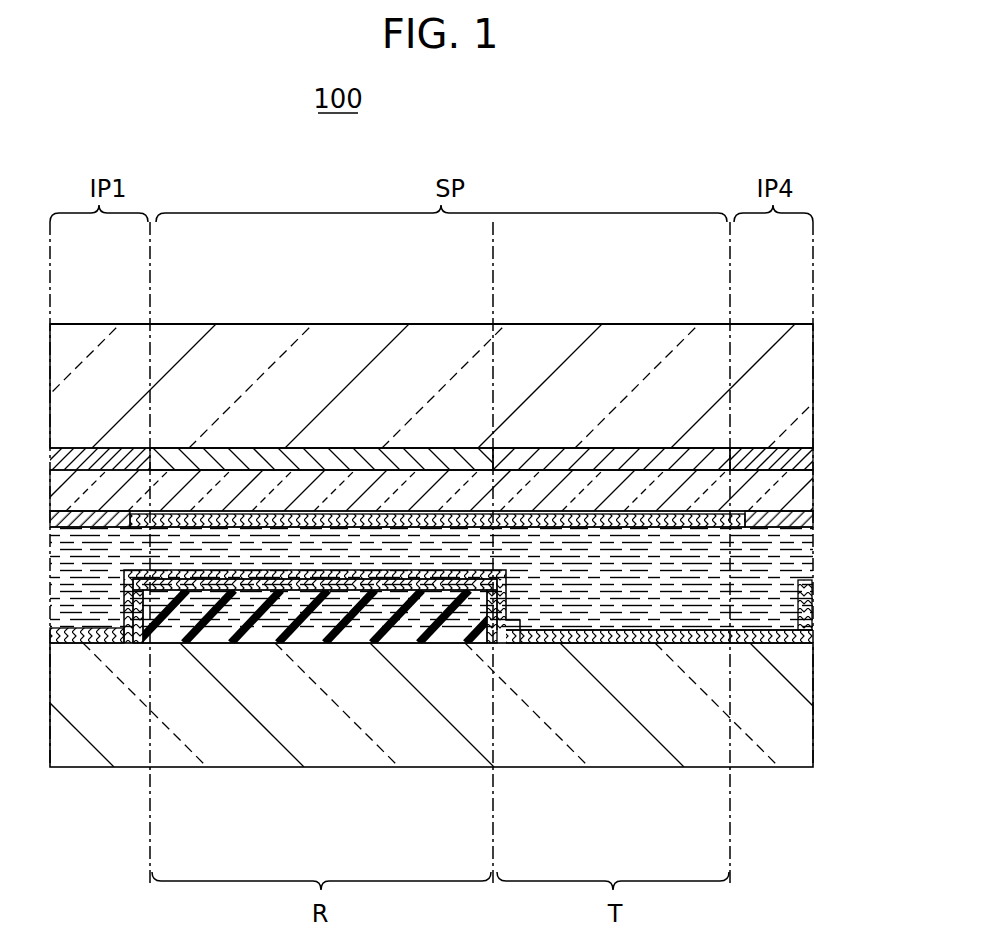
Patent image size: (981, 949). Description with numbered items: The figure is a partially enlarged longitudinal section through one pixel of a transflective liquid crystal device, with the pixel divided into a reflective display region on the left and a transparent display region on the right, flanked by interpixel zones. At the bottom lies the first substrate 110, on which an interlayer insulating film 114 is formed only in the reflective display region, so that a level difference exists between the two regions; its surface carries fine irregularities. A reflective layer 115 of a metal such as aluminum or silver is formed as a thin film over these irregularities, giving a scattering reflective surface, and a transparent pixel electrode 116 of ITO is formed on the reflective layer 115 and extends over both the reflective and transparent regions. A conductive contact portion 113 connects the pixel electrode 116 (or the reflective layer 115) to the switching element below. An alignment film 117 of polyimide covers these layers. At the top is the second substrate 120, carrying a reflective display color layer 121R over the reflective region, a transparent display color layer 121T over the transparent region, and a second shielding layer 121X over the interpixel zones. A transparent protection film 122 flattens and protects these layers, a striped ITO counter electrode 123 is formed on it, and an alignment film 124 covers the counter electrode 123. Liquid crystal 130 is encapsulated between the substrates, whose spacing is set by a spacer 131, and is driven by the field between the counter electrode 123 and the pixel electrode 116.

The first substrate 110 is at (84, 752).
The conductive contact portion 113 is at (490, 632).
The interlayer insulating film 114 is at (216, 633).
The reflective layer 115 is at (344, 632).
The pixel electrode 116 is at (595, 636).
The alignment film 117 is at (775, 640).
The second substrate 120 is at (232, 338).
The reflective display color layer 121R is at (318, 456).
The transparent display color layer 121T is at (549, 456).
The second shielding layer 121X is at (770, 456).
The transparent protection film 122 is at (802, 484).
The counter electrode 123 is at (718, 512).
The alignment film 124 is at (790, 520).
The liquid crystal 130 is at (786, 556).
The spacer 131 is at (372, 576).